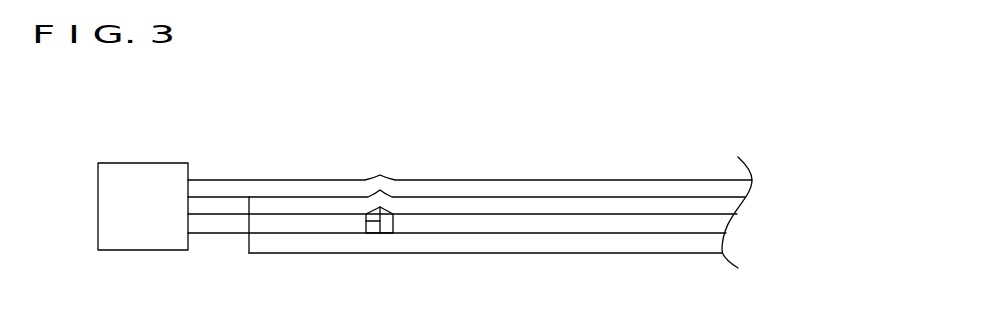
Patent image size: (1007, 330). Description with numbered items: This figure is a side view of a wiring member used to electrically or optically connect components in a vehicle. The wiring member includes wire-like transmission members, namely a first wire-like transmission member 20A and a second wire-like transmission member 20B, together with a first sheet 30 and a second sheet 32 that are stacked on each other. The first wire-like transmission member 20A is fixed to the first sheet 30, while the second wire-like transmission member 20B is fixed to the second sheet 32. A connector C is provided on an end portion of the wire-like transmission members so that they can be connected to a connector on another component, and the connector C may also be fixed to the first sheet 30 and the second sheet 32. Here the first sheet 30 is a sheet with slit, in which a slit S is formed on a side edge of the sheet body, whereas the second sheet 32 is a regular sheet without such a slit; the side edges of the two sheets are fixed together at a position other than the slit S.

The connector C is at (143, 250).
The first wire-like transmission member 20A is at (380, 175).
The second wire-like transmission member 20B is at (218, 233).
The first sheet 30 is at (430, 233).
The second sheet 32 is at (393, 243).
The slit S is at (370, 233).